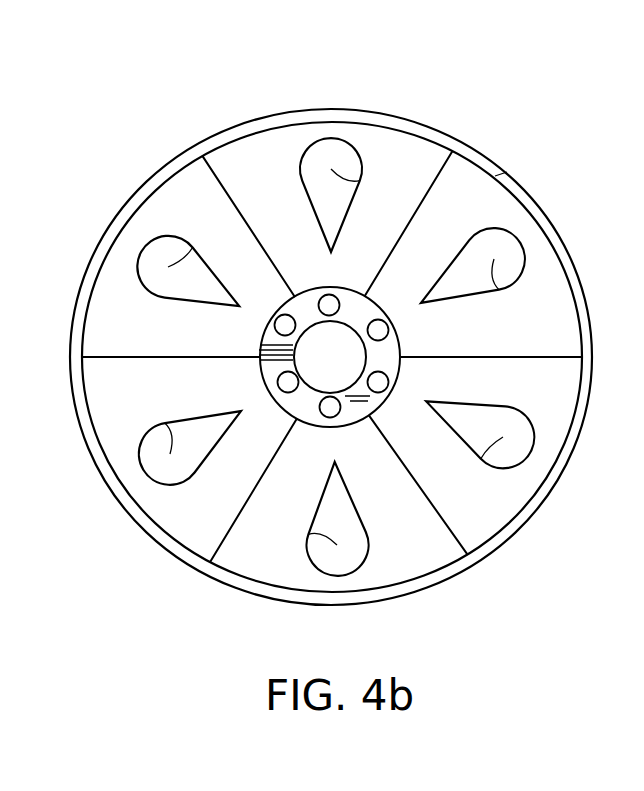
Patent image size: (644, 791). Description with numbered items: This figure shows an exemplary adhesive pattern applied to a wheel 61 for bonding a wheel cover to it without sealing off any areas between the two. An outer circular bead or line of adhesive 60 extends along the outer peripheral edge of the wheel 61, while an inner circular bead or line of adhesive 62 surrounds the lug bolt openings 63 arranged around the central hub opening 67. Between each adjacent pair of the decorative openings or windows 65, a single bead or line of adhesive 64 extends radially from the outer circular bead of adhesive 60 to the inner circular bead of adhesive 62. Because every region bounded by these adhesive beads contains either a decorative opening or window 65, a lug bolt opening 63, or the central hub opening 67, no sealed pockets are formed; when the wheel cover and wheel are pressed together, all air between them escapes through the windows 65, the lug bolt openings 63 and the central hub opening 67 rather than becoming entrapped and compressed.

The outer circular bead or line of adhesive 60 is at (500, 170).
The wheel 61 is at (179, 118).
The inner circular bead or line of adhesive 62 is at (400, 337).
The lug bolt openings 63 is at (323, 302).
The bead or line of adhesive 64 is at (527, 357).
The decorative openings or windows 65 is at (360, 188).
The central hub opening 67 is at (341, 369).